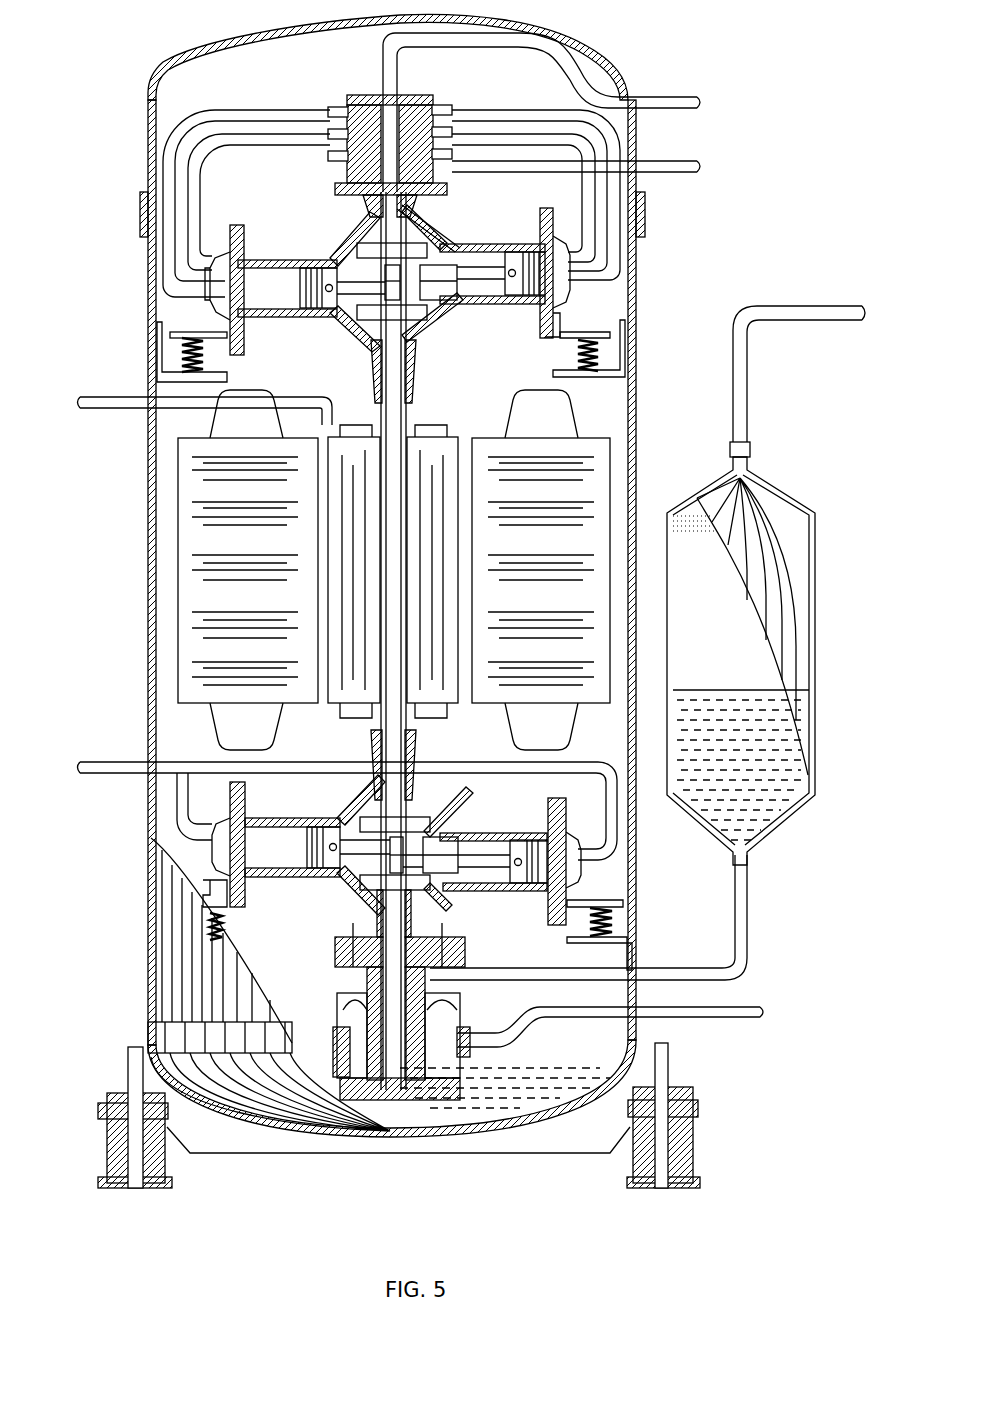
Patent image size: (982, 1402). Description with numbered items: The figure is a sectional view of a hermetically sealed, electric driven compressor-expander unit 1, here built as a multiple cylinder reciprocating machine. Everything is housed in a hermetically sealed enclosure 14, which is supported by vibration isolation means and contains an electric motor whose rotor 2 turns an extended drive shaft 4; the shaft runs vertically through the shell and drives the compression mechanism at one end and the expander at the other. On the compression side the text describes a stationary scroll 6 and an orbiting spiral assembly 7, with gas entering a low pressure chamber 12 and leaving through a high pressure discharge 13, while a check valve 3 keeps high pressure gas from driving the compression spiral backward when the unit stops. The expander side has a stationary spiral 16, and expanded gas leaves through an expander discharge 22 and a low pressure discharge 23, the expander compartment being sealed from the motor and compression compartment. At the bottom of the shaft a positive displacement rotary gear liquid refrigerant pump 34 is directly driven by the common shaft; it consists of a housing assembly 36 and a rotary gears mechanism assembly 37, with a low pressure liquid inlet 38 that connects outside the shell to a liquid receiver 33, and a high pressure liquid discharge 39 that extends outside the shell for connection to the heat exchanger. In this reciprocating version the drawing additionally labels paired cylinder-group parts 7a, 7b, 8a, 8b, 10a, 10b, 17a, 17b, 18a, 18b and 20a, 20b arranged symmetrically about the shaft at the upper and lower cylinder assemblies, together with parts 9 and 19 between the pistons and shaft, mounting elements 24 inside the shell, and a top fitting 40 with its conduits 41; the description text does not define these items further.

The compressor-expander unit 1 is at (138, 1235).
The rotor 2 is at (456, 440).
The check valve 3 is at (290, 440).
The drive shaft 4 is at (408, 432).
The stationary scroll 6 is at (445, 803).
The orbiting spiral assembly 7 is at (432, 332).
The lower left cylinder 7a is at (268, 818).
The lower right cylinder 7b is at (508, 840).
The lower left bearing plate 8a is at (228, 830).
The lower right bearing plate 8b is at (565, 850).
The piston rod 9 is at (245, 850).
The lower left piston 10a is at (295, 878).
The lower right piston 10b is at (520, 892).
The low pressure chamber 12 is at (143, 762).
The high pressure discharge 13 is at (118, 398).
The hermetically sealed enclosure 14 is at (148, 662).
The stationary spiral 16 is at (465, 244).
The upper left cylinder end 17a is at (268, 320).
The upper right cylinder end 17b is at (512, 305).
The upper left bearing plate 18a is at (232, 252).
The upper right bearing plate 18b is at (548, 225).
The yoke guide crosshead 19 is at (407, 243).
The upper left piston 20a is at (320, 268).
The upper right piston 20b is at (520, 250).
The expander discharge 22 is at (622, 98).
The low pressure discharge 23 is at (641, 166).
The mounting spring 24 is at (590, 340).
The liquid receiver 33 is at (816, 705).
The liquid refrigerant pump 34 is at (342, 962).
The housing assembly 36 is at (462, 1025).
The rotary gears mechanism assembly 37 is at (342, 1006).
The low pressure liquid inlet 38 is at (688, 967).
The high pressure liquid discharge 39 is at (750, 1003).
The motor terminal 40 is at (412, 106).
The terminal conduits 41 is at (345, 163).